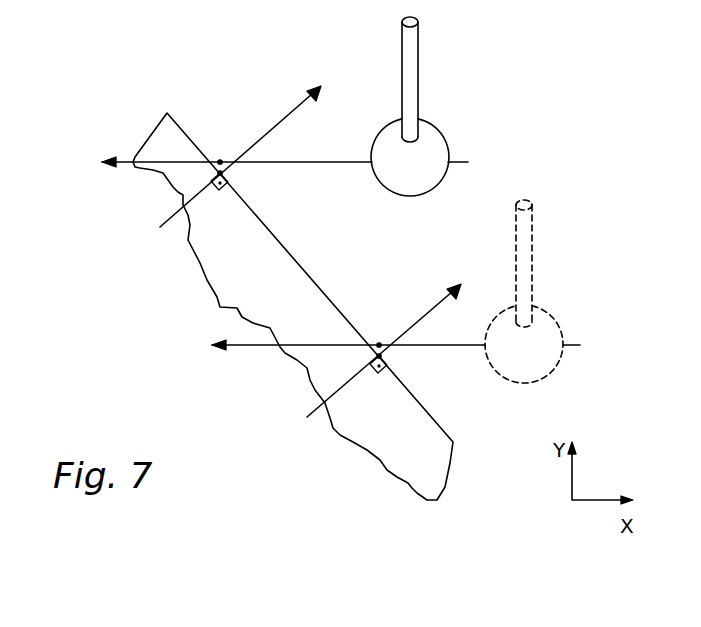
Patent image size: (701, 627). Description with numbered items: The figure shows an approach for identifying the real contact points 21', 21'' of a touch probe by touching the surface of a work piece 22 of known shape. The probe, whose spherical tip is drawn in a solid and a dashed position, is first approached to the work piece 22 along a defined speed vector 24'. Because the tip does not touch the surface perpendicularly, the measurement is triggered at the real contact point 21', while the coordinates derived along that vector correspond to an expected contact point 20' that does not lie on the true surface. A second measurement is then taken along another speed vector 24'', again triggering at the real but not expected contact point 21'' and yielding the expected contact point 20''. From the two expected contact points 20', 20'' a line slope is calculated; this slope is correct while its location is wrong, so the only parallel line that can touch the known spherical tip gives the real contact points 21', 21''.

The expected contact point 20' is at (185, 128).
The expected contact point 20'' is at (409, 310).
The real contact point 21' is at (244, 157).
The real contact point 21'' is at (397, 350).
The work piece 22 is at (415, 463).
The speed vector 24' is at (257, 190).
The speed vector 24'' is at (375, 372).